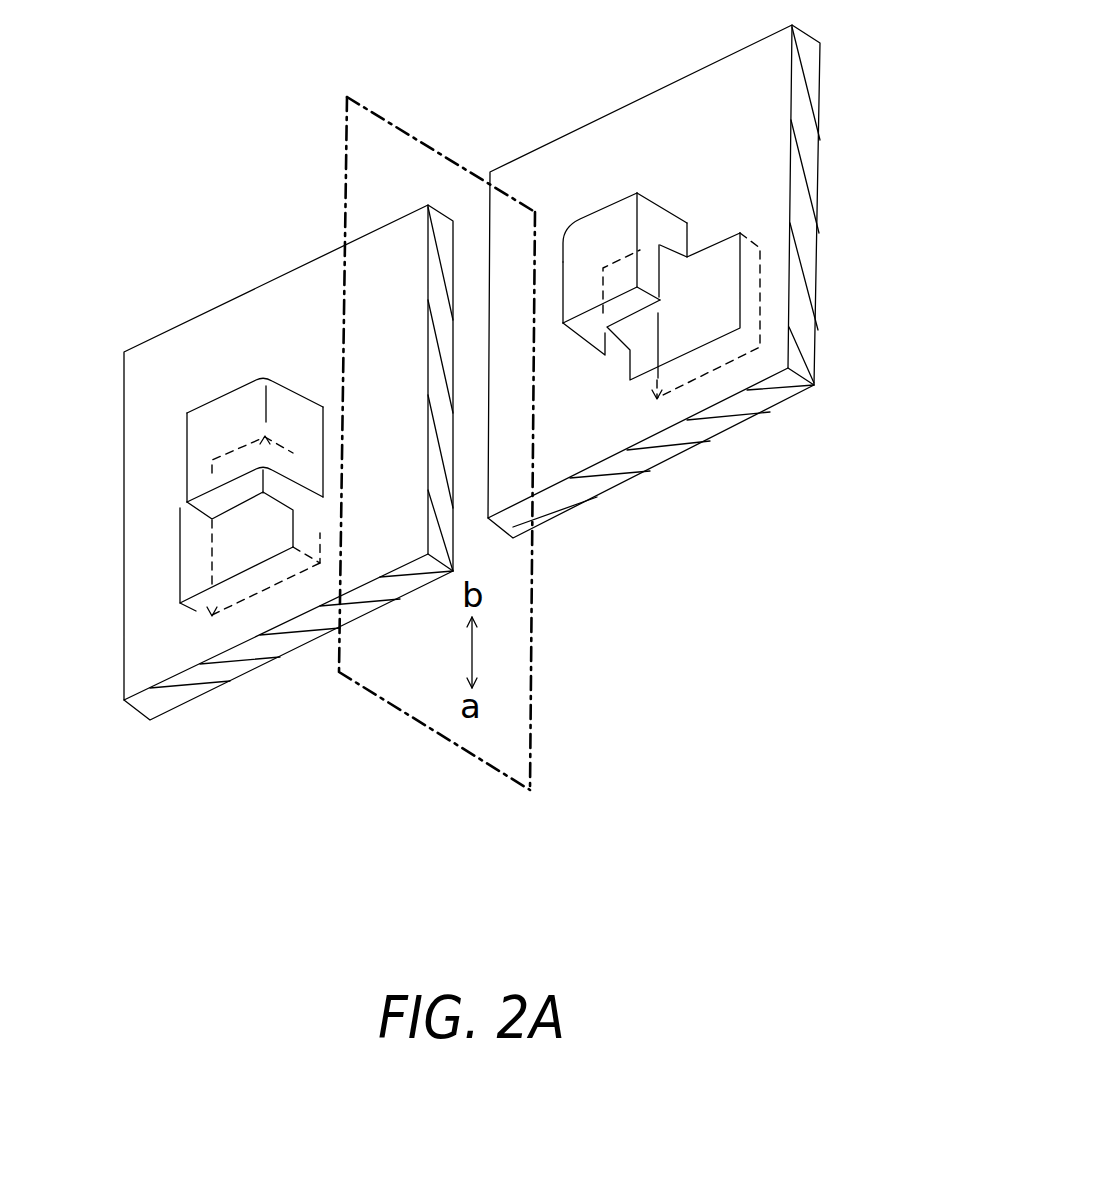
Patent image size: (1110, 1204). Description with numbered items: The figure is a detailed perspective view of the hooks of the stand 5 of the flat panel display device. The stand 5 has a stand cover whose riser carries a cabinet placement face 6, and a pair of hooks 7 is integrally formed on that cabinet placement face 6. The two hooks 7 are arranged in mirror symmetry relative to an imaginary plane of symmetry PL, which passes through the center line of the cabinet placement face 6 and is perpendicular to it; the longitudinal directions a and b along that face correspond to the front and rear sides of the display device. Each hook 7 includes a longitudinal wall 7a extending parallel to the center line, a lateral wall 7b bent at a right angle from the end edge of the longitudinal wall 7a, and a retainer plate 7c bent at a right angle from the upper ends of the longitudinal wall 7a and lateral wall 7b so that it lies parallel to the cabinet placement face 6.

The stand 5 is at (570, 127).
The cabinet placement face 6 is at (395, 225).
The hook 7 is at (309, 383).
The longitudinal wall 7a is at (297, 494).
The lateral wall 7b is at (684, 242).
The retainer plate 7c is at (228, 497).
The imaginary plane of symmetry PL is at (532, 674).